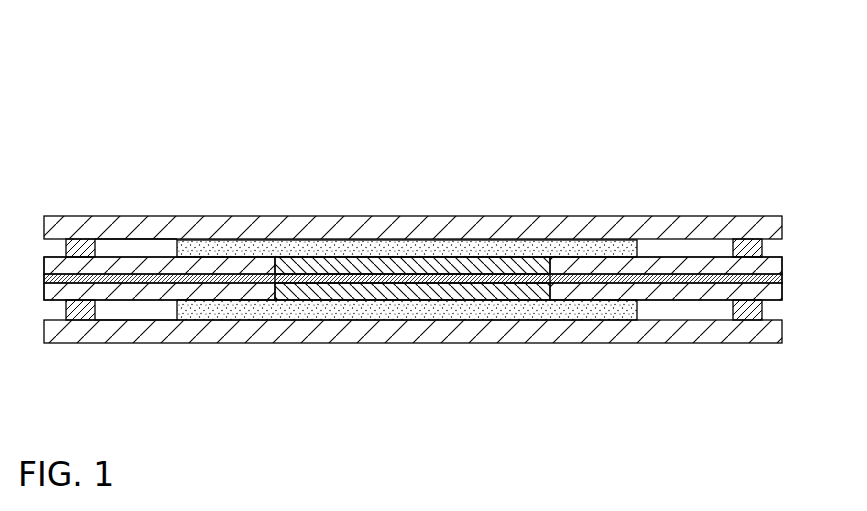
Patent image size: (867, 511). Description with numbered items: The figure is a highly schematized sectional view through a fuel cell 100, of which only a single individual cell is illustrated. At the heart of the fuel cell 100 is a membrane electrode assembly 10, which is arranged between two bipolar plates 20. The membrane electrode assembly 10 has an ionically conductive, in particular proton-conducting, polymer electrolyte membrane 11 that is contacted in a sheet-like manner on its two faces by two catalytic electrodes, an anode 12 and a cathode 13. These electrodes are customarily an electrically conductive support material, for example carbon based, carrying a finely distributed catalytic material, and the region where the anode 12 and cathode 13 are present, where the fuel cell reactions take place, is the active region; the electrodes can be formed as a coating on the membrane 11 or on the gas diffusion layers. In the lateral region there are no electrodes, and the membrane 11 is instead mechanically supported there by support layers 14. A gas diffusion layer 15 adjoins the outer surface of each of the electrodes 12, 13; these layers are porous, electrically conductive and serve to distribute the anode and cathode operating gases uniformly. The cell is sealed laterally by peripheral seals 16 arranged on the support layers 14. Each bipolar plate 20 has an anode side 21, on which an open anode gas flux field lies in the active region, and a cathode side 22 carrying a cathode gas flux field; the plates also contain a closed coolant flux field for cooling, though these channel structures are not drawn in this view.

The fuel cell 100 is at (167, 95).
The membrane electrode assembly 10 is at (782, 240).
The polymer electrolyte membrane 11 is at (527, 280).
The anode 12 is at (433, 281).
The cathode 13 is at (438, 294).
The support layers 14 is at (680, 293).
The gas diffusion layer 15 is at (380, 308).
The peripheral seals 16 is at (743, 305).
The bipolar plates 20 is at (62, 333).
The anode side 21 is at (125, 250).
The cathode side 22 is at (171, 317).